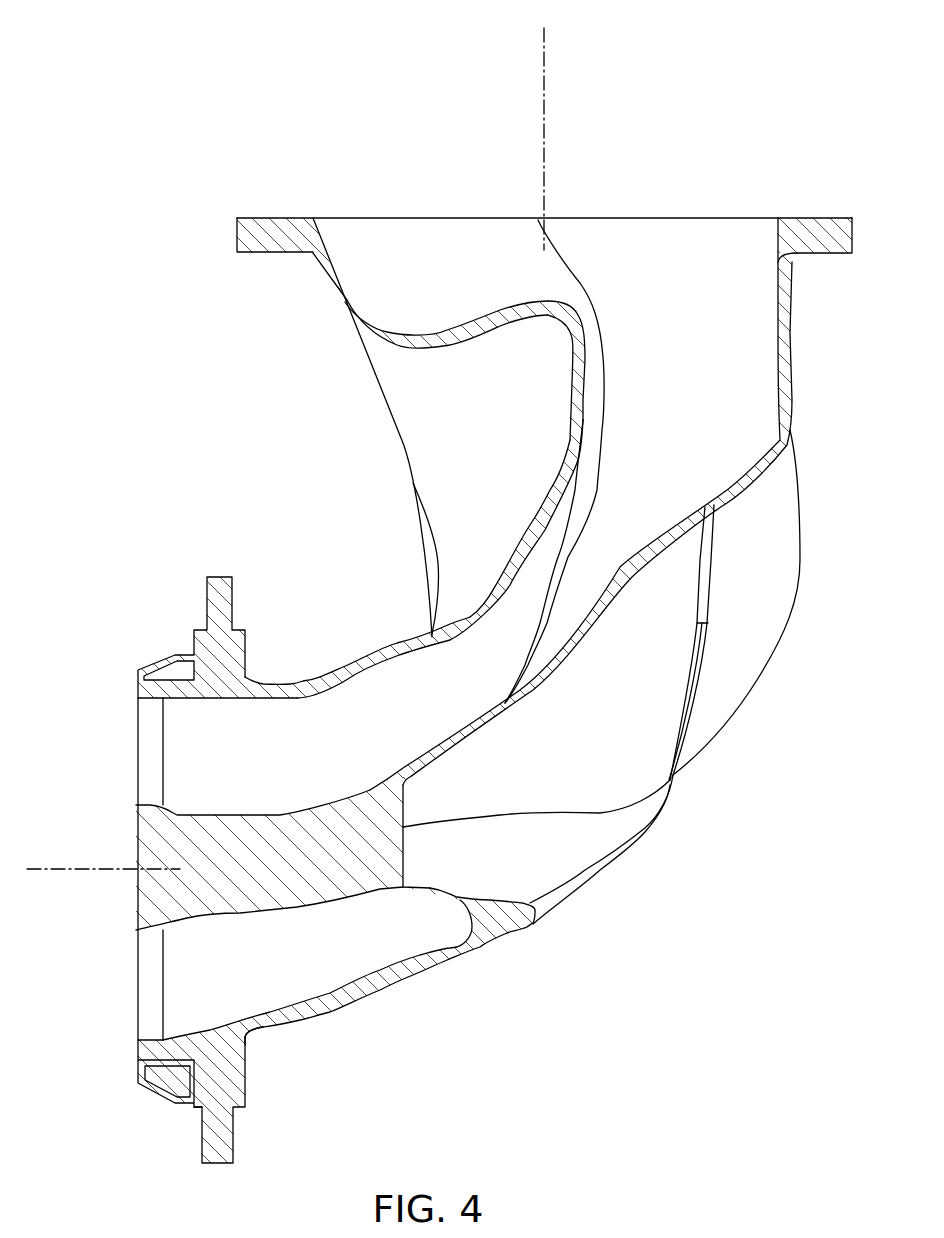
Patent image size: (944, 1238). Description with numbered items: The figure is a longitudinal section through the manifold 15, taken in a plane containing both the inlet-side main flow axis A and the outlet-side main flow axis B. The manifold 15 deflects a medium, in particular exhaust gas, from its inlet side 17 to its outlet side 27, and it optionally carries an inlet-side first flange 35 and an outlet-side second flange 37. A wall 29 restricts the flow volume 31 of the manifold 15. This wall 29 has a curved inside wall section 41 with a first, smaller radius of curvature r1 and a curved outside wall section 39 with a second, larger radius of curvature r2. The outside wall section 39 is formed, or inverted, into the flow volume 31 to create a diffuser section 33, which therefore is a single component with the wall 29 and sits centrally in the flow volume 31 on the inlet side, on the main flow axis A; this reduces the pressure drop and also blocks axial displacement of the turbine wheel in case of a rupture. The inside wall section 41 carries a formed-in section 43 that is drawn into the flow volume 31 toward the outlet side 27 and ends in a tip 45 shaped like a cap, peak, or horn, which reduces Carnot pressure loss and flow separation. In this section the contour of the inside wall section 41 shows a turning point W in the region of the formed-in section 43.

The manifold 15 is at (719, 93).
The inlet side 17 is at (123, 1023).
The outlet side 27 is at (734, 197).
The wall 29 is at (420, 983).
The flow volume 31 is at (676, 451).
The diffuser section 33 is at (216, 897).
The first flange 35 is at (207, 1143).
The second flange 37 is at (823, 219).
The outside wall section 39 is at (505, 930).
The inside wall section 41 is at (350, 300).
The formed-in section 43 is at (540, 499).
The tip 45 is at (565, 306).
The turning point W is at (479, 330).
The first radius of curvature r1 is at (356, 666).
The second radius of curvature r2 is at (298, 1024).
The inlet-side main flow axis A is at (73, 868).
The outlet-side main flow axis B is at (546, 83).